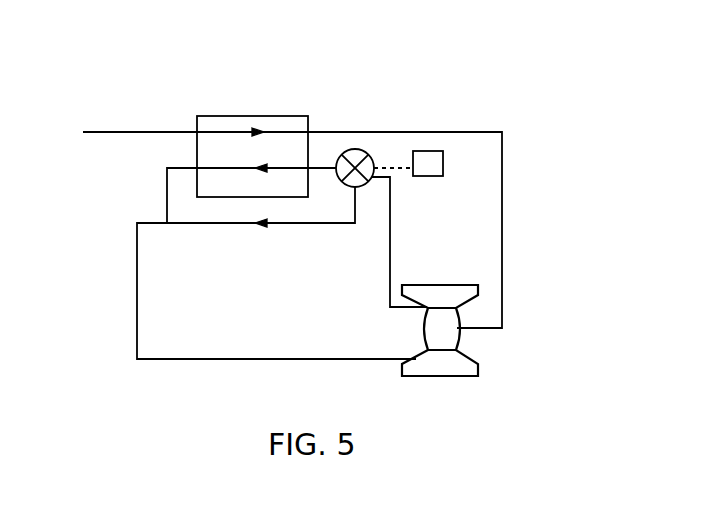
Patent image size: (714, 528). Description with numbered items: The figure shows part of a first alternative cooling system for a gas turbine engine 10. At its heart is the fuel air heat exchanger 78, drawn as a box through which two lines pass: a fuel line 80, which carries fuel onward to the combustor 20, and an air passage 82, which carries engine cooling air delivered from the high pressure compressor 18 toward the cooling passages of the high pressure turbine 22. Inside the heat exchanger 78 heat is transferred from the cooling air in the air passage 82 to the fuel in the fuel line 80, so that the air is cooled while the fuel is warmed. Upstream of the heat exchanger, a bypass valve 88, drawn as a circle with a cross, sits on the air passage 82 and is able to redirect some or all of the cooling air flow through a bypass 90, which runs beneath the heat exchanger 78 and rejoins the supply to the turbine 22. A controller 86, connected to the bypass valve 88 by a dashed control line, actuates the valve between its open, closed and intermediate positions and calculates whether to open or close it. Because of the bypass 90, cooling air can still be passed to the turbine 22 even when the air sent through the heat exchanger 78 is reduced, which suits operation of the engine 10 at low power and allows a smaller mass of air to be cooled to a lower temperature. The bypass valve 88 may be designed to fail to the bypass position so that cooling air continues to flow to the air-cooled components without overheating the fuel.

The gas turbine engine 10 is at (444, 292).
The high pressure compressor 18 is at (462, 285).
The combustor 20 is at (428, 343).
The high pressure turbine 22 is at (480, 362).
The fuel air heat exchanger 78 is at (230, 116).
The fuel line 80 is at (115, 131).
The air passage 82 is at (276, 166).
The controller 86 is at (437, 151).
The bypass valve 88 is at (365, 152).
The bypass 90 is at (308, 226).